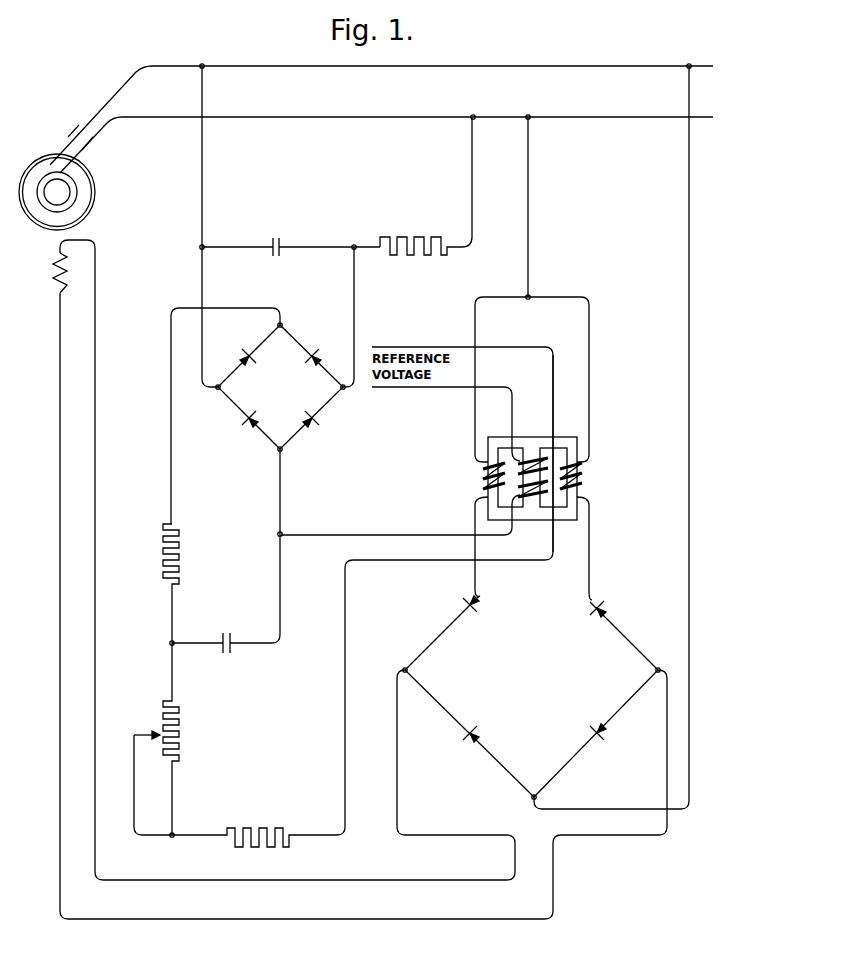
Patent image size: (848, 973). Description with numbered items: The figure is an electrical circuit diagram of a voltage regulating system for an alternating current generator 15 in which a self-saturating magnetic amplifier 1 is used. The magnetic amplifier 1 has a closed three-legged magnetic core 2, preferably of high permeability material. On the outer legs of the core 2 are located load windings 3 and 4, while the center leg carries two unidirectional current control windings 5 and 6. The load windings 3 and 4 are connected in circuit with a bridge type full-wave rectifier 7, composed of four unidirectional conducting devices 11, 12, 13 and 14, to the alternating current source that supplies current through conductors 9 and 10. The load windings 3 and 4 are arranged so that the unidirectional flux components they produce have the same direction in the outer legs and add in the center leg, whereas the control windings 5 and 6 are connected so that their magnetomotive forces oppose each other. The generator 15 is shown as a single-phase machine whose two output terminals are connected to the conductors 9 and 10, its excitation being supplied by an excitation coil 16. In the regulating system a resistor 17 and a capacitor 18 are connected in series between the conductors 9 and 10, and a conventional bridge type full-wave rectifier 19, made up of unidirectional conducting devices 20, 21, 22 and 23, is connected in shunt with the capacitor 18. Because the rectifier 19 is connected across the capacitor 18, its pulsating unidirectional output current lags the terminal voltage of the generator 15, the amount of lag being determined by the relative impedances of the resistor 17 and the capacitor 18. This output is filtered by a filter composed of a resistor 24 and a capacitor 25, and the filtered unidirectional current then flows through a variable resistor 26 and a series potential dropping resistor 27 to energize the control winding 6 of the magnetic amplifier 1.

The magnetic amplifier 1 is at (528, 358).
The magnetic core 2 is at (568, 437).
The load winding 3 is at (483, 488).
The load winding 4 is at (583, 488).
The control winding 5 is at (535, 462).
The control winding 6 is at (527, 495).
The bridge type full-wave rectifier 7 is at (539, 681).
The conductor 9 is at (588, 117).
The conductor 10 is at (664, 66).
The unidirectional conducting device 11 is at (479, 604).
The unidirectional conducting device 12 is at (590, 606).
The unidirectional conducting device 13 is at (592, 733).
The unidirectional conducting device 14 is at (464, 735).
The alternating current generator 15 is at (97, 197).
The excitation coil 16 is at (50, 283).
The resistor 17 is at (412, 236).
The capacitor 18 is at (283, 240).
The bridge type full-wave rectifier 19 is at (289, 393).
The unidirectional conducting device 20 is at (311, 349).
The unidirectional conducting device 21 is at (250, 349).
The unidirectional conducting device 22 is at (243, 420).
The unidirectional conducting device 23 is at (320, 420).
The resistor 24 is at (181, 548).
The capacitor 25 is at (229, 632).
The variable resistor 26 is at (181, 722).
The potential dropping resistor 27 is at (250, 826).